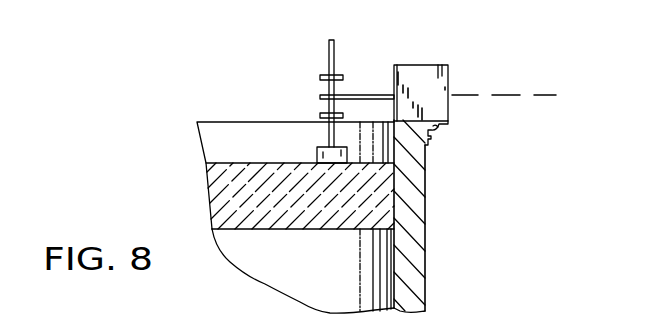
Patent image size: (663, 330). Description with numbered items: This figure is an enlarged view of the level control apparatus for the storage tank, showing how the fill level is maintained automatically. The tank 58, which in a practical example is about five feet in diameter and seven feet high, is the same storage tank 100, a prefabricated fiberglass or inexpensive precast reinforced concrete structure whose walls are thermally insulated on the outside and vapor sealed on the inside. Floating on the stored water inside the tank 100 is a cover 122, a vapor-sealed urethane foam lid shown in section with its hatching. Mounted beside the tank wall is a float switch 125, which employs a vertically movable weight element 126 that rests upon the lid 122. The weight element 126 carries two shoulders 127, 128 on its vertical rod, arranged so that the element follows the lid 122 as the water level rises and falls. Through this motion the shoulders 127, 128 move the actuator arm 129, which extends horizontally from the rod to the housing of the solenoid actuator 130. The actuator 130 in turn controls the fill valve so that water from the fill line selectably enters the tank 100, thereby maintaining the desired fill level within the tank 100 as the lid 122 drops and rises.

The tank 58 is at (210, 114).
The tank 100 is at (420, 275).
The cover 122 is at (206, 168).
The float switch 125 is at (453, 48).
The weight element 126 is at (323, 155).
The shoulder 127 is at (323, 115).
The shoulder 128 is at (327, 76).
The actuator arm 129 is at (370, 97).
The solenoid actuator 130 is at (447, 88).